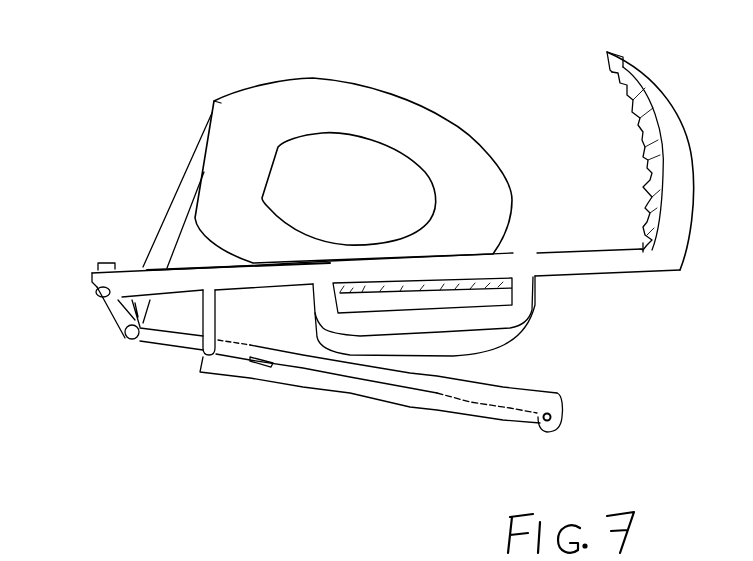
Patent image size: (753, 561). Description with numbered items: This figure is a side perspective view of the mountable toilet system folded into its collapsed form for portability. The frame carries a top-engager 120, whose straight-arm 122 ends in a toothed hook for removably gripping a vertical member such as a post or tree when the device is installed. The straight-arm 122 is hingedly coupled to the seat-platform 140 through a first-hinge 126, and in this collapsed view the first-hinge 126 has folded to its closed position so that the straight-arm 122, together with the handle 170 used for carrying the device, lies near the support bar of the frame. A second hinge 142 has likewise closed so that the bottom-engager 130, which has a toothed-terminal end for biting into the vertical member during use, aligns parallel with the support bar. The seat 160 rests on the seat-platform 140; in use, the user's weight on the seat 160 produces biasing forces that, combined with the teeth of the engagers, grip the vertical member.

The top-engager 120 is at (693, 143).
The straight-arm 122 is at (598, 240).
The first-hinge 126 is at (96, 327).
The bottom-engager 130 is at (330, 397).
The seat-platform 140 is at (155, 210).
The second hinge 142 is at (555, 432).
The seat 160 is at (376, 78).
The handle 170 is at (533, 340).